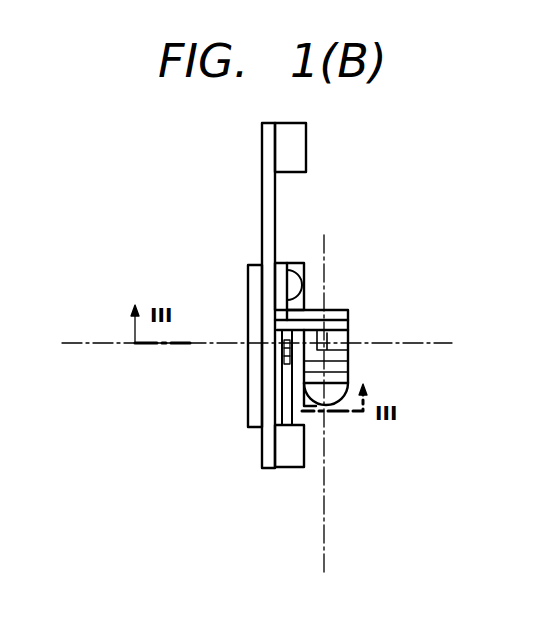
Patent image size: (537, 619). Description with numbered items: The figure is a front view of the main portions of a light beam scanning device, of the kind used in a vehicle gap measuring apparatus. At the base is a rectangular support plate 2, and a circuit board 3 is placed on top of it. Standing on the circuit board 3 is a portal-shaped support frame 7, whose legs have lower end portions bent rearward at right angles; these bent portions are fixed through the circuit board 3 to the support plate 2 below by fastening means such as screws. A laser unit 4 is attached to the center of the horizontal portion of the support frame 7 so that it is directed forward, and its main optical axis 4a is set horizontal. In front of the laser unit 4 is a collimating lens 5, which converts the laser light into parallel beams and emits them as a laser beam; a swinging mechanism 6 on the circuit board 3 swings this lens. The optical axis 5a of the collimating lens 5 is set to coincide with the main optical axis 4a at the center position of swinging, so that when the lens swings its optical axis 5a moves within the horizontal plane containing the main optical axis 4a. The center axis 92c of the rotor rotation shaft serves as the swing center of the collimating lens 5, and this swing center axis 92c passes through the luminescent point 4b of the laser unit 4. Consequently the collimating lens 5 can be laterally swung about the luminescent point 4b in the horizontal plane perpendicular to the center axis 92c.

The support plate 2 is at (252, 398).
The circuit board 3 is at (268, 473).
The laser unit 4 is at (350, 358).
The main optical axis 4a is at (350, 373).
The luminescent point 4b is at (335, 340).
The collimating lens 5 is at (337, 412).
The optical axis 5a is at (322, 487).
The swinging mechanism 6 is at (316, 426).
The support frame 7 is at (344, 311).
The center axis 92c is at (98, 345).